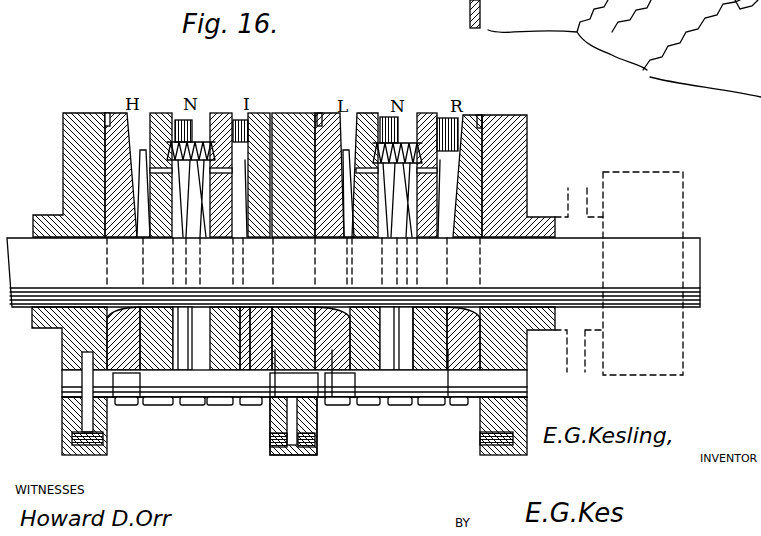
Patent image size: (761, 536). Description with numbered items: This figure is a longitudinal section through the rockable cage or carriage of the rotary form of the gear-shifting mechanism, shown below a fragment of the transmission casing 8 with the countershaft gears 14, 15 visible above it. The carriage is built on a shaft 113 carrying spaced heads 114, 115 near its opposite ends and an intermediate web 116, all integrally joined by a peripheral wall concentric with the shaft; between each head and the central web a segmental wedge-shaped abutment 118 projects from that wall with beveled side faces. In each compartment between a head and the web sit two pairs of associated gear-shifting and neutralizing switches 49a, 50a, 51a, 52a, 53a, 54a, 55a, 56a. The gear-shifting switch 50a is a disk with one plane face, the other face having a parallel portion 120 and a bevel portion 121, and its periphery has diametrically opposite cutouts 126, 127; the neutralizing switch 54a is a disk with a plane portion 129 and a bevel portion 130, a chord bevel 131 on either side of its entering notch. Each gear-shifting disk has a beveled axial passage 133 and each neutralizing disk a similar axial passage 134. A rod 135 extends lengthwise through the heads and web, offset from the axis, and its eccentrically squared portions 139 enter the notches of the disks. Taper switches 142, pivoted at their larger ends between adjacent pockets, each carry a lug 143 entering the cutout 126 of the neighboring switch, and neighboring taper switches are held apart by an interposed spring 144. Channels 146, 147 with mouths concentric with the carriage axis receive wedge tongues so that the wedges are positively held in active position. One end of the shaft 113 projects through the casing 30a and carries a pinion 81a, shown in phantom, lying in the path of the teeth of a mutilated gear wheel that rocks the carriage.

The transmission casing 8 is at (468, 7).
The gear 14 is at (702, 48).
The gear 15 is at (569, 35).
The casing 30a is at (590, 188).
The pinion 81a is at (684, 172).
The shaft 113 is at (701, 258).
The head 114 is at (527, 151).
The head 115 is at (64, 159).
The intermediate web 116 is at (295, 114).
The segmental wedge-shaped abutment 118 is at (187, 232).
The parallel surface portion 120 is at (262, 345).
The bevel surface portion 121 is at (256, 114).
The cutout 126 is at (150, 169).
The cutout 127 is at (159, 406).
The plane portion 129 is at (233, 232).
The bevel portion 130 is at (141, 232).
The chord bevel 131 is at (83, 408).
The axial passage 133 is at (245, 240).
The axial passage 134 is at (117, 311).
The rod 135 is at (512, 381).
The eccentrically squared portion 139 is at (121, 406).
The taper switch 142 is at (164, 112).
The lug 143 is at (108, 113).
The spring 144 is at (203, 115).
The channel 146 is at (88, 450).
The channel 147 is at (280, 458).
The switch 49a is at (155, 406).
The gear-shifting switch 50a is at (213, 406).
The switch 51a is at (370, 406).
The switch 52a is at (426, 406).
The switch 53a is at (117, 342).
The neutralizing switch 54a is at (254, 327).
The switch 55a is at (335, 406).
The switch 56a is at (524, 354).